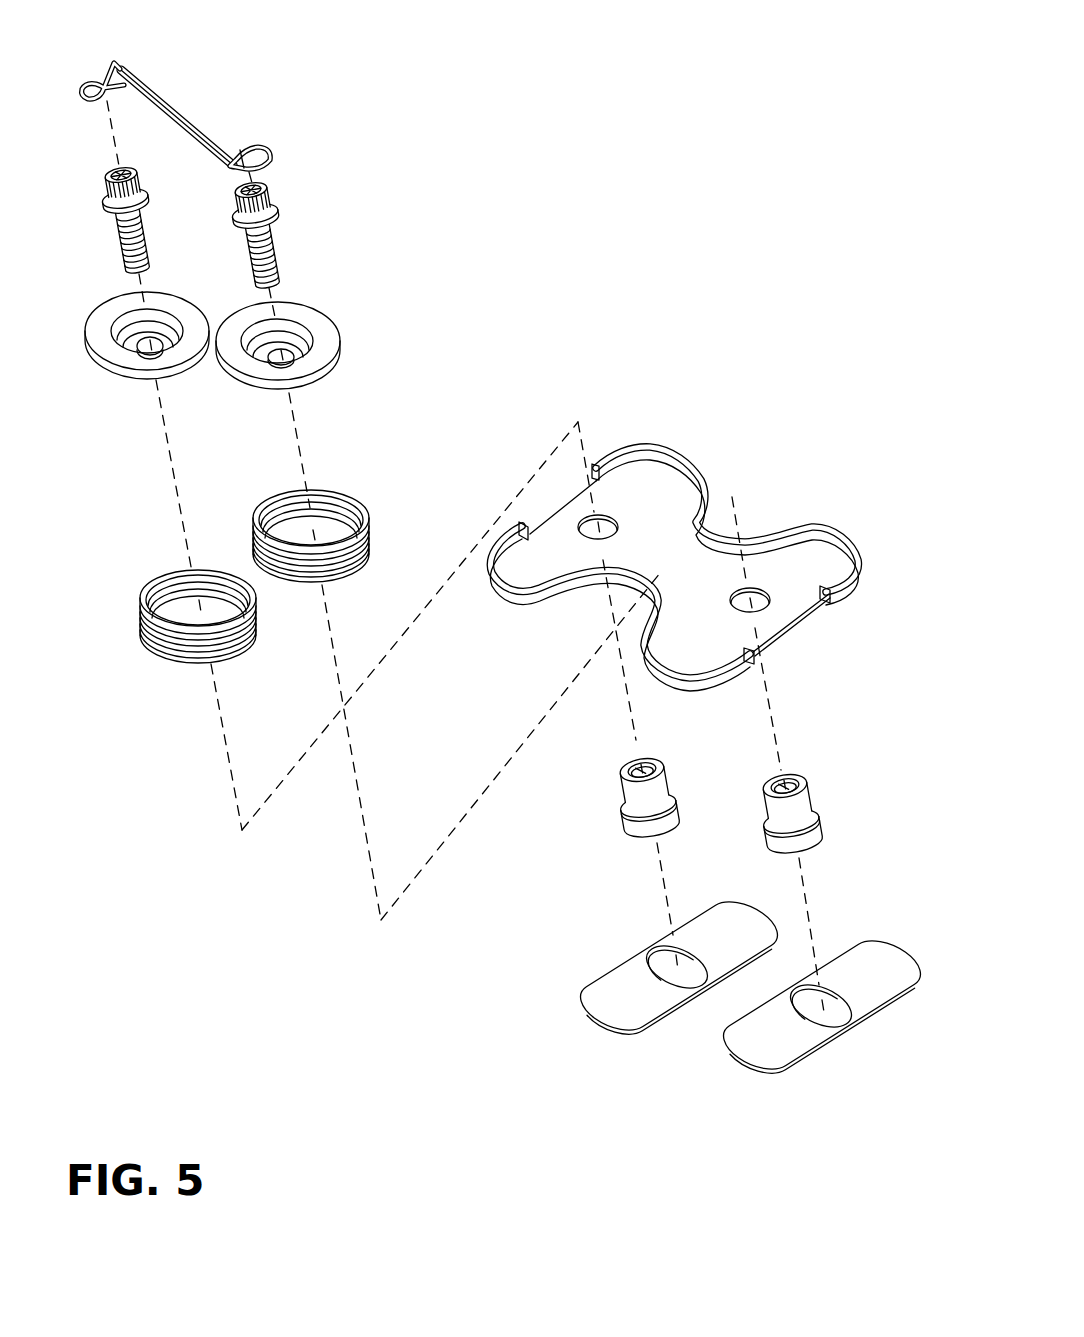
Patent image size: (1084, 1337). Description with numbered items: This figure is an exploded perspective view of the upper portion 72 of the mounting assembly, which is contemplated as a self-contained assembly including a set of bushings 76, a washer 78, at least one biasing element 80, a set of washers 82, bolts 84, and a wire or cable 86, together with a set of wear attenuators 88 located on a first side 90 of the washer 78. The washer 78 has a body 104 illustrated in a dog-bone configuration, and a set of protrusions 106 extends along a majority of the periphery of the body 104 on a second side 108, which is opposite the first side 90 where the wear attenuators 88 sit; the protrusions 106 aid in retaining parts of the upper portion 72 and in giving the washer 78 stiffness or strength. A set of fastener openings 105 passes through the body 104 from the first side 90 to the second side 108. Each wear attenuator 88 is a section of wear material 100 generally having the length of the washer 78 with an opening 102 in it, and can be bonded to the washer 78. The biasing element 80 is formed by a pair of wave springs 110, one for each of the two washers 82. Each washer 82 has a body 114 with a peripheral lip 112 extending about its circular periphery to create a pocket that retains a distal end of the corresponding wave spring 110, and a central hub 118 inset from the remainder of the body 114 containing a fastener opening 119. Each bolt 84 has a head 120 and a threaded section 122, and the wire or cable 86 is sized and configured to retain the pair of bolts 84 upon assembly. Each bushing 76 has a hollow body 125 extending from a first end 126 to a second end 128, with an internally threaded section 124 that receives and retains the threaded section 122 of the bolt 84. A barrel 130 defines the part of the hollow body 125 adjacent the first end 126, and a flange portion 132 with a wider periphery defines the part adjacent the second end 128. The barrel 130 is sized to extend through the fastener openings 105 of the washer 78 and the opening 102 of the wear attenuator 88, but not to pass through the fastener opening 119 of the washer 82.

The upper portion 72 is at (56, 52).
The set of bushings 76 is at (746, 801).
The washer 78 is at (693, 542).
The biasing element 80 is at (278, 569).
The set of washers 82 is at (250, 351).
The bolts 84 is at (251, 161).
The wire or cable 86 is at (188, 124).
The set of wear attenuators 88 is at (688, 1017).
The first side 90 is at (841, 598).
The section of wear material 100 is at (688, 1017).
The opening 102 is at (662, 968).
The body 104 is at (783, 556).
The set of fastener openings 105 is at (582, 535).
The set of protrusions 106 is at (687, 453).
The second side 108 is at (642, 483).
The wave spring 110 is at (125, 650).
The peripheral lip 112 is at (318, 381).
The body 114 is at (340, 316).
The central hub 118 is at (300, 338).
The fastener opening 119 is at (295, 357).
The head 120 is at (258, 188).
The threaded section 122 is at (272, 246).
The internally threaded section 124 is at (632, 762).
The hollow body 125 is at (846, 801).
The first end 126 is at (797, 773).
The second end 128 is at (810, 850).
The barrel 130 is at (798, 812).
The flange portion 132 is at (810, 835).